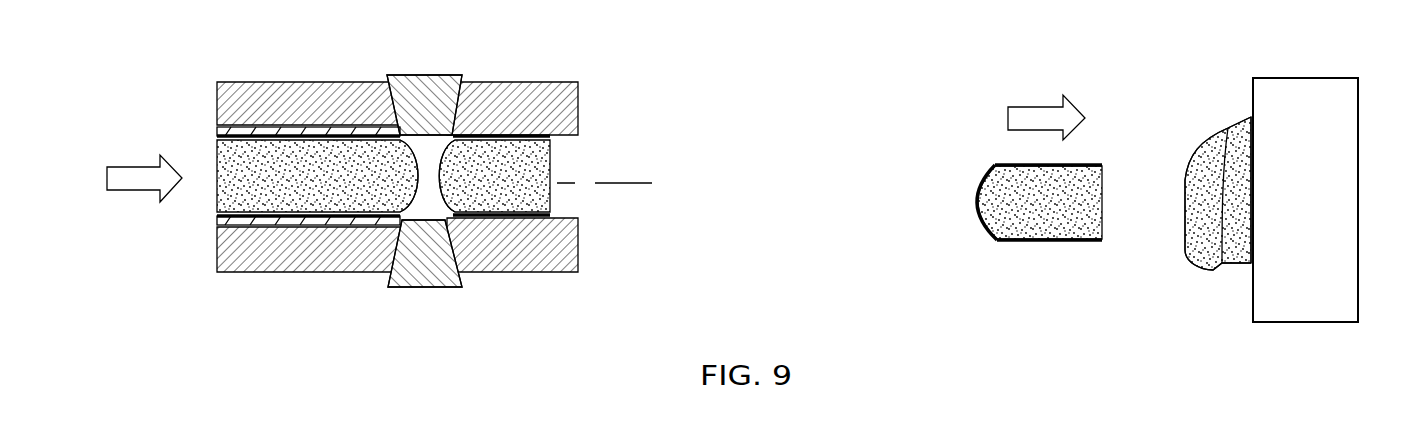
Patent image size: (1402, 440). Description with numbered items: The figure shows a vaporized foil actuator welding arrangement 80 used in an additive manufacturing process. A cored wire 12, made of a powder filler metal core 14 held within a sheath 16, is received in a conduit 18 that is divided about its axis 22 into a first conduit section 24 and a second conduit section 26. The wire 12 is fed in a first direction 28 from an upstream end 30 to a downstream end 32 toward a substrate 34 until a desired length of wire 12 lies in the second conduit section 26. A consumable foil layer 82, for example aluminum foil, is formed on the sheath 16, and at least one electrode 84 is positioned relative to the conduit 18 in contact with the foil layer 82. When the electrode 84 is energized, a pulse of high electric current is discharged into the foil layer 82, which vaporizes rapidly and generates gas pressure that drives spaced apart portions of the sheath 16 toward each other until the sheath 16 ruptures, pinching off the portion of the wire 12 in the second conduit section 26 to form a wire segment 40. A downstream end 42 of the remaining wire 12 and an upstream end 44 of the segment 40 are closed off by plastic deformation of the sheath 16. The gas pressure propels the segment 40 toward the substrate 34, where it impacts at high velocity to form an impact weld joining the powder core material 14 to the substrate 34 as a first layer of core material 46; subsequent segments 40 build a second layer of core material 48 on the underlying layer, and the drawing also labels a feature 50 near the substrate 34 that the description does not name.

The cored wire 12 is at (212, 158).
The powder filler metal core 14 is at (550, 197).
The sheath 16 is at (233, 130).
The conduit 18 is at (553, 103).
The axis 22 is at (637, 184).
The first conduit section 24 is at (333, 255).
The second conduit section 26 is at (505, 258).
The first direction 28 is at (133, 190).
The upstream end 30 is at (180, 73).
The downstream end 32 is at (557, 67).
The substrate 34 is at (1252, 98).
The wire segment 40 is at (1053, 263).
The downstream end of the remaining wire 42 is at (400, 222).
The upstream end of the segment 44 is at (443, 220).
The first layer of core material 46 is at (1240, 263).
The second layer of core material 48 is at (1200, 265).
The interface 50 is at (1250, 117).
The vaporized foil actuator welding arrangement 80 is at (623, 125).
The foil layer 82 is at (287, 130).
The electrode 84 is at (423, 120).